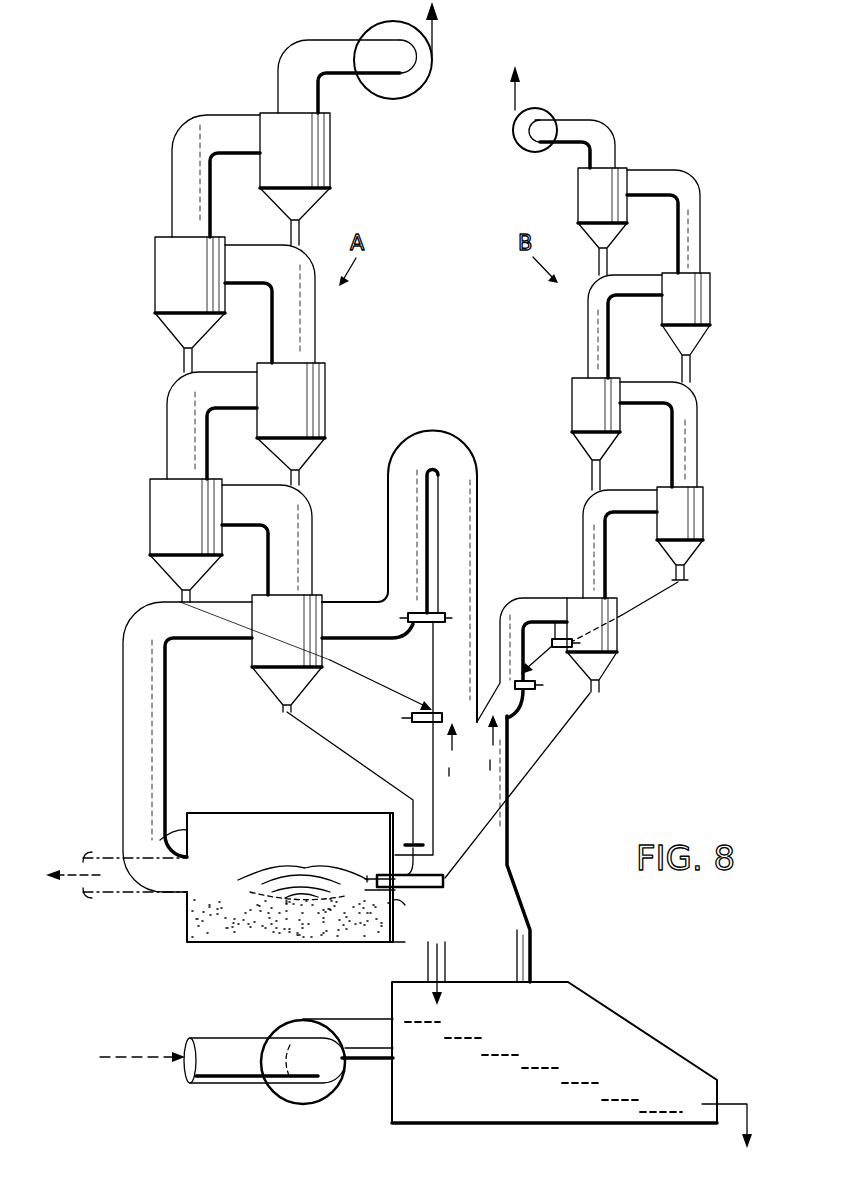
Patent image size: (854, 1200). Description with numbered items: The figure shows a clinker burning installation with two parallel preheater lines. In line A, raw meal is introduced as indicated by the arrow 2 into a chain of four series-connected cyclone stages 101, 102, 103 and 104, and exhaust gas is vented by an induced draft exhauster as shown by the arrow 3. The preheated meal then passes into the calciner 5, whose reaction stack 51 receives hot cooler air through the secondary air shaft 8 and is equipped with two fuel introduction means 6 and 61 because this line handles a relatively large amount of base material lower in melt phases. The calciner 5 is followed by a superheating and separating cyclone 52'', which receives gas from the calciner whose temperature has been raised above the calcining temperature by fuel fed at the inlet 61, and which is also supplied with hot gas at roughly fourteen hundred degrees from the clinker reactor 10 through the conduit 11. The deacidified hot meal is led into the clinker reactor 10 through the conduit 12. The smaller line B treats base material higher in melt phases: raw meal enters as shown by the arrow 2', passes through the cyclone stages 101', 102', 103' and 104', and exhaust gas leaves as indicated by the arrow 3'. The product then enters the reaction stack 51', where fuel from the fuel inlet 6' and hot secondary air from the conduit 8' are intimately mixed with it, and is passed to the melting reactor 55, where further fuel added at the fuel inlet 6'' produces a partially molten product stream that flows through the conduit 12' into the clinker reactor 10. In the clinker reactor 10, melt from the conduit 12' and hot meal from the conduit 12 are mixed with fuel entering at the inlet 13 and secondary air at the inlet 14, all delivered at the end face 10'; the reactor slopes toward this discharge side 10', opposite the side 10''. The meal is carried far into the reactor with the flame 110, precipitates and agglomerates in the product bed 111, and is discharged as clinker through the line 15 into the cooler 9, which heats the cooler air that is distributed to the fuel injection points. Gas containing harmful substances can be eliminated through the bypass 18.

The raw meal arrow 2 is at (207, 156).
The exhaust gas arrow 3 is at (370, 57).
The cyclone stage 104 is at (323, 179).
The cyclone stage 103 is at (207, 304).
The cyclone stage 102 is at (272, 424).
The cyclone stage 101 is at (204, 540).
The superheating and separating cyclone 52'' is at (255, 653).
The conduit 11 is at (156, 793).
The opposite side of the clinker reactor 10'' is at (133, 811).
The calciner 5 is at (453, 445).
The reaction stack 51 is at (434, 662).
The fuel introduction means 61 is at (421, 630).
The fuel feed means 6 is at (386, 706).
The secondary air shaft 8 is at (431, 751).
The conduit 12 is at (355, 793).
The clinker reactor 10 is at (290, 877).
The flame 110 is at (308, 870).
The product bed 111 is at (279, 922).
The bypass 18 is at (118, 893).
The fuel inlet 13 is at (445, 893).
The secondary air inlet 14 is at (388, 906).
The end face / discharge side of the clinker reactor 10' is at (379, 968).
The clinker discharge line 15 is at (447, 952).
The hot secondary air conduit 8' is at (526, 751).
The conduit 12' is at (517, 837).
The reaction stack 51' is at (522, 635).
The fuel inlet 6' is at (530, 706).
The fuel inlet 6'' is at (599, 611).
The melting reactor 55 is at (618, 650).
The cyclone stage 101' is at (673, 542).
The cyclone stage 102' is at (608, 434).
The cyclone stage 103' is at (678, 327).
The cyclone stage 104' is at (567, 221).
The raw meal arrow 2' is at (673, 197).
The exhaust gas arrow 3' is at (562, 117).
The cooler 9 is at (574, 1028).